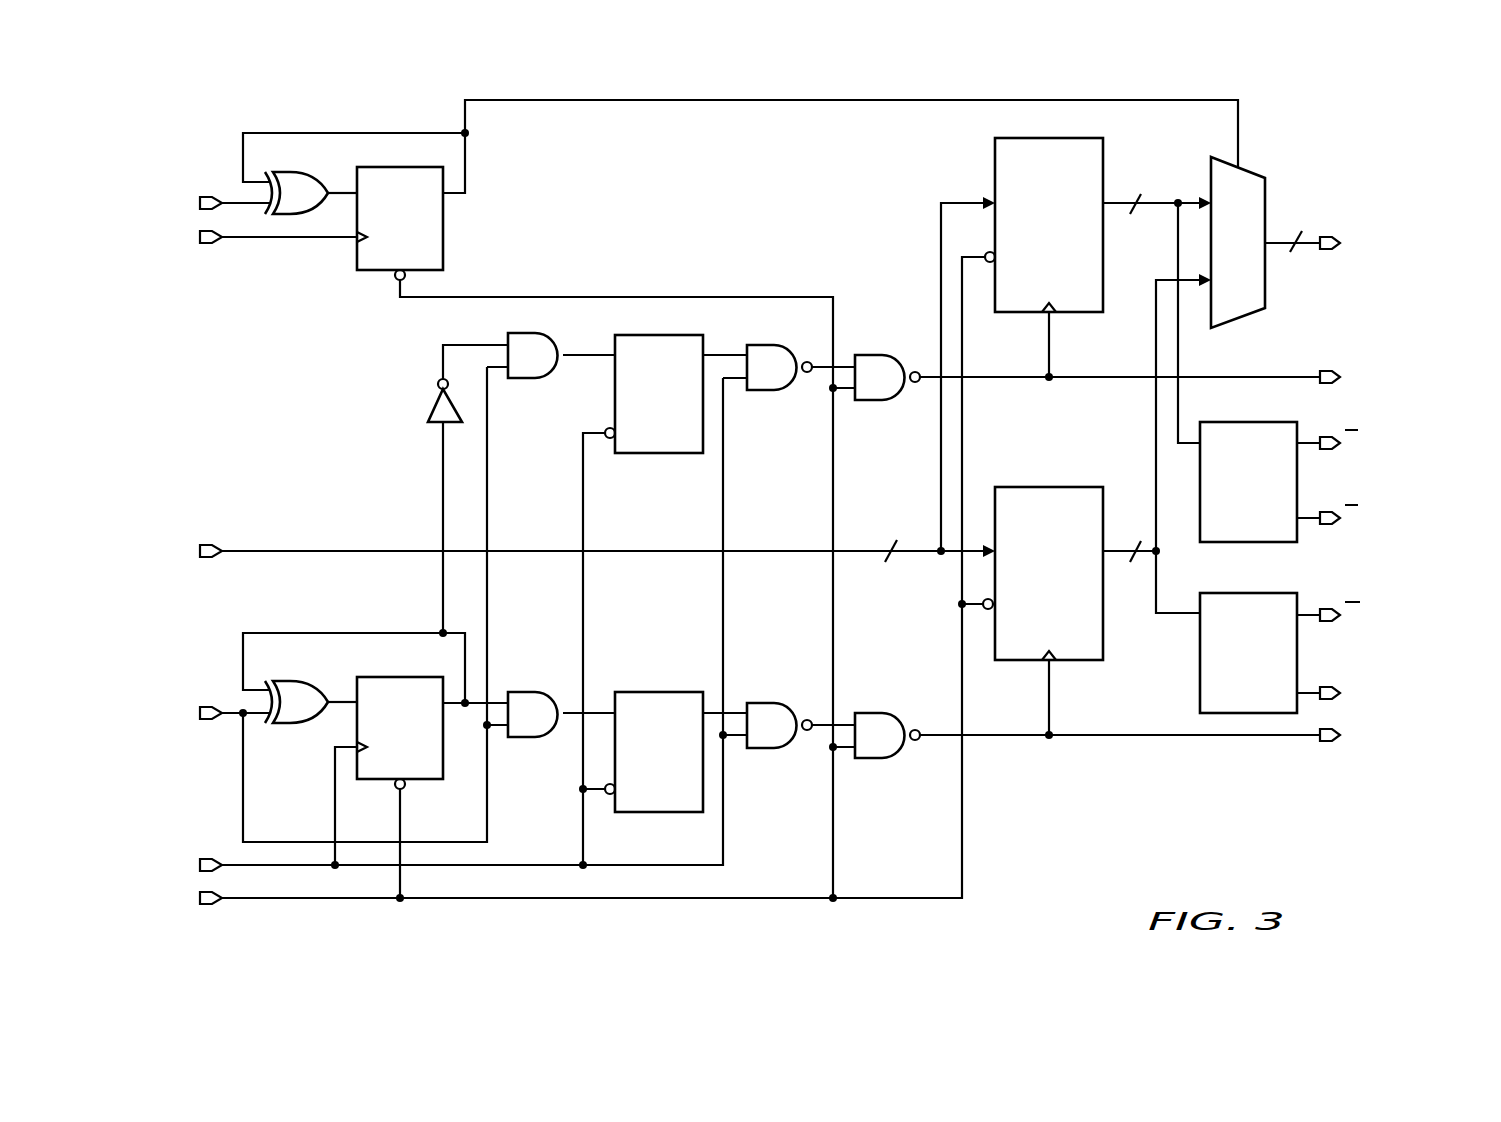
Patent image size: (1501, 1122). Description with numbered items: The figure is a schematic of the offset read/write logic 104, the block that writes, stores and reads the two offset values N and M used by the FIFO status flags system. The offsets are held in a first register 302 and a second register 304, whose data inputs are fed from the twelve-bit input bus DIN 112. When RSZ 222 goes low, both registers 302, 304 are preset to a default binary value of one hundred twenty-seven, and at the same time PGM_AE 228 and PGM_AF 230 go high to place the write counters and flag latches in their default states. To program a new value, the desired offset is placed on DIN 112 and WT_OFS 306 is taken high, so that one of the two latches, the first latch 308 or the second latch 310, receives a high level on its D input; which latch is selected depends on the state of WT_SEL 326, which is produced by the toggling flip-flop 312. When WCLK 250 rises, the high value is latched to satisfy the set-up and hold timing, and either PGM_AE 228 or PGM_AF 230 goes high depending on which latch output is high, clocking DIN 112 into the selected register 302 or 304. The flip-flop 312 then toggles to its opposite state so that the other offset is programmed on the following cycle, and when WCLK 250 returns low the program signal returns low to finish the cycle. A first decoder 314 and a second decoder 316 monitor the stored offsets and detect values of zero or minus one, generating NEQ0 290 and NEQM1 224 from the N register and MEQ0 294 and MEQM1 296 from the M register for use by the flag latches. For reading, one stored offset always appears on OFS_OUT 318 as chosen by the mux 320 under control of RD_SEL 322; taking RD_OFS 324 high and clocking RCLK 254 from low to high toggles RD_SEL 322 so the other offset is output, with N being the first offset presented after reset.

The offset read/write logic 104 is at (1124, 808).
The input bus DIN 112 is at (183, 535).
The RSZ 222 is at (178, 915).
The NEQM1 224 is at (1372, 533).
The PGM_AE 228 is at (1377, 362).
The PGM_AF 230 is at (1372, 750).
The WCLK 250 is at (178, 847).
The RCLK 254 is at (172, 253).
The NEQ0 290 is at (1402, 443).
The MEQ0 294 is at (1400, 617).
The MEQM1 296 is at (1412, 692).
The register U1 302 is at (1080, 313).
The register U2 304 is at (1080, 483).
The WT_OFS 306 is at (157, 695).
The latch U11 308 is at (658, 455).
The latch U12 310 is at (657, 813).
The flip-flop U7 312 is at (423, 780).
The decoder U4 314 is at (1298, 470).
The decoder U5 316 is at (1198, 677).
The OFS_OUT 318 is at (1390, 225).
The mux U3 320 is at (1267, 280).
The RD_SEL 322 is at (458, 130).
The RD_OFS 324 is at (157, 190).
The WT_SEL 326 is at (292, 628).